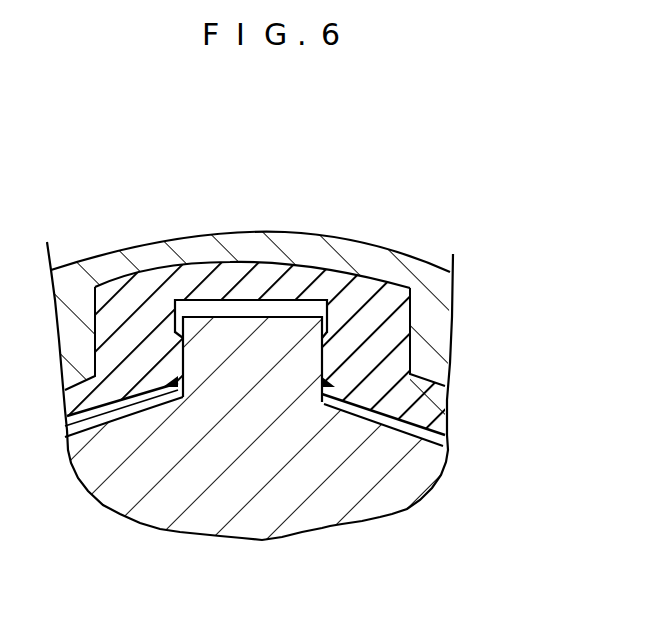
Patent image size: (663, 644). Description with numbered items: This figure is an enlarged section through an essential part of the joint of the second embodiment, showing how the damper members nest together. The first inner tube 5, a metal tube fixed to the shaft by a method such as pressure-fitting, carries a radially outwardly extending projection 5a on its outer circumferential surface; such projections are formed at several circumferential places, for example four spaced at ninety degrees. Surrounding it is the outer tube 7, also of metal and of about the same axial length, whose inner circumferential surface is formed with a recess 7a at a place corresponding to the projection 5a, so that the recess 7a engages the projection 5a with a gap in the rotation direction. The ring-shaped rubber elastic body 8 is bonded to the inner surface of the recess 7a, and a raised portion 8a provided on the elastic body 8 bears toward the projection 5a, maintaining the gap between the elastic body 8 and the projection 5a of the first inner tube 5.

The first inner tube 5 is at (303, 522).
The projections 5a is at (250, 330).
The outer tube 7 is at (437, 322).
The recesses 7a is at (227, 266).
The elastic body 8 is at (122, 300).
The raised portion 8a is at (180, 333).